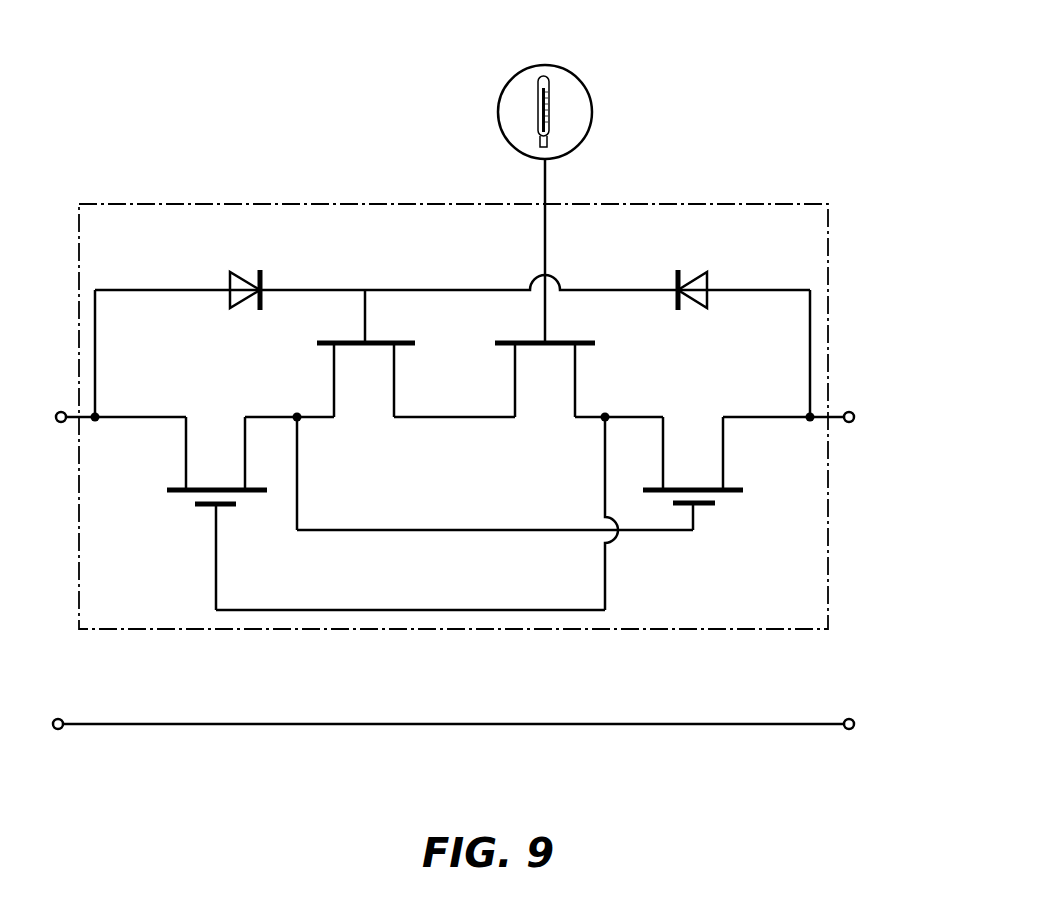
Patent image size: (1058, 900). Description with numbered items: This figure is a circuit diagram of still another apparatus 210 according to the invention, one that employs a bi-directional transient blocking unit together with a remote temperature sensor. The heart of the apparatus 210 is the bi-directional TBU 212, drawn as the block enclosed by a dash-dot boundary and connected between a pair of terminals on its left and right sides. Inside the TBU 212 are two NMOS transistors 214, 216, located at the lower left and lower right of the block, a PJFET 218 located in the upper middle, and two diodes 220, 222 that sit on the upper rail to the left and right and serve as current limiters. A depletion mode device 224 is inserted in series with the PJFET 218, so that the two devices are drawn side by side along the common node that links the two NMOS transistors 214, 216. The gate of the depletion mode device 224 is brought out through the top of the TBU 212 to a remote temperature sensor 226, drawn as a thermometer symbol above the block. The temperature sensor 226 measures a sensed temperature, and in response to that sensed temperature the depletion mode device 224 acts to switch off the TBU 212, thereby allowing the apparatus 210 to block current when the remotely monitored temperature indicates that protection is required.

The apparatus 210 is at (834, 84).
The bi-directional TBU 212 is at (828, 272).
The NMOS transistor 214 is at (200, 506).
The NMOS transistor 216 is at (706, 506).
The PJFET 218 is at (322, 346).
The diode 220 is at (232, 300).
The diode 222 is at (708, 300).
The depletion mode device 224 is at (592, 346).
The remote temperature sensor 226 is at (499, 110).